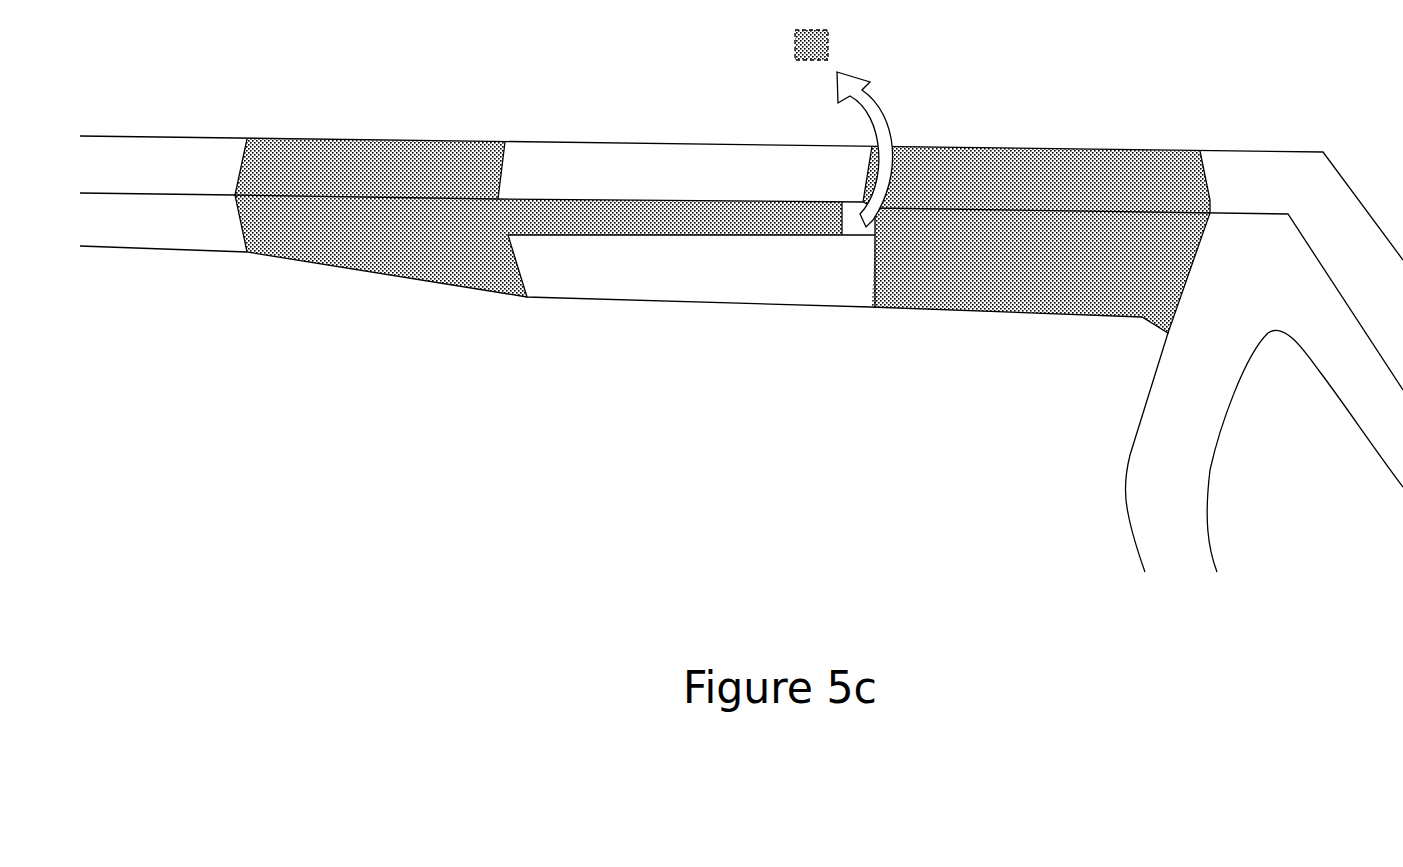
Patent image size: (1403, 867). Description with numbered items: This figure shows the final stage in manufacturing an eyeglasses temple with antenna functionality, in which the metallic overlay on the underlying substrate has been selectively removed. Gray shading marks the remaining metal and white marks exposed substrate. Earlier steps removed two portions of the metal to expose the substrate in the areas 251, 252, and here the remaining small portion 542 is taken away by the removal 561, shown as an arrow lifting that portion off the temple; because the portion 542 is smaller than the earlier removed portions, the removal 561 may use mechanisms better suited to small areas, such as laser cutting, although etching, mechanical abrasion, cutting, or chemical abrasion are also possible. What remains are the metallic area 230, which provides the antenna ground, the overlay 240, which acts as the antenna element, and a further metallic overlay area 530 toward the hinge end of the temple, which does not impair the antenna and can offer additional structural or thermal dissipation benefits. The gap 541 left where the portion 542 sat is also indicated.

The metallic area 230 is at (372, 300).
The overlay 240 is at (620, 233).
The area 251 is at (679, 284).
The area 252 is at (683, 189).
The metallic overlay area 530 is at (968, 384).
The slot 541 is at (852, 227).
The portion 542 is at (797, 52).
The removal 561 is at (882, 110).